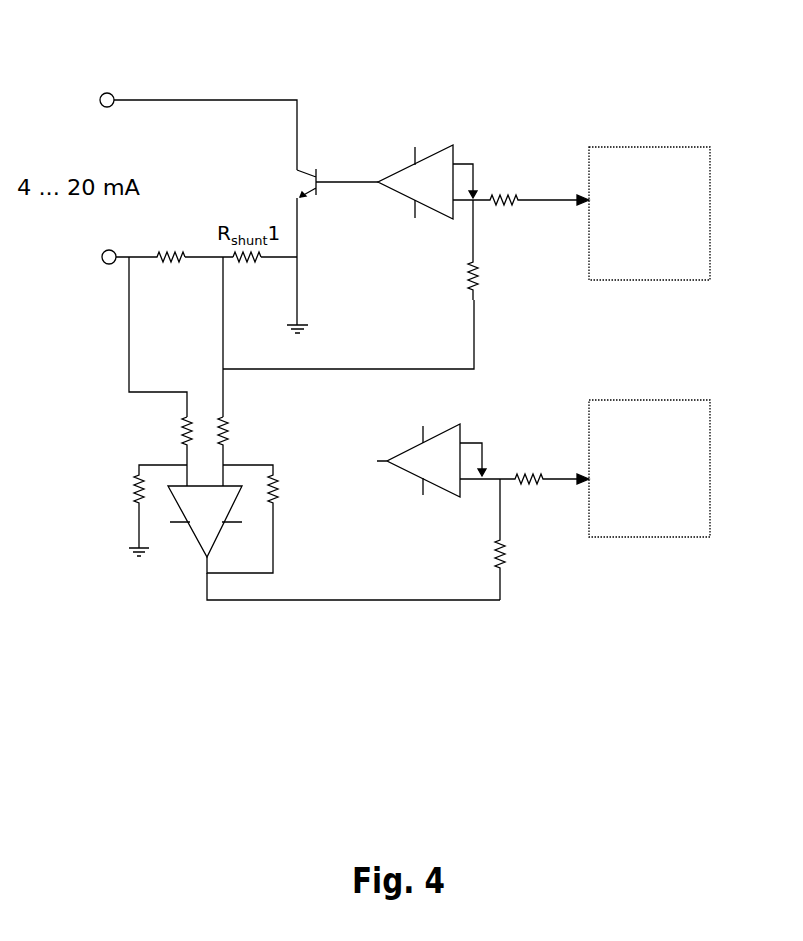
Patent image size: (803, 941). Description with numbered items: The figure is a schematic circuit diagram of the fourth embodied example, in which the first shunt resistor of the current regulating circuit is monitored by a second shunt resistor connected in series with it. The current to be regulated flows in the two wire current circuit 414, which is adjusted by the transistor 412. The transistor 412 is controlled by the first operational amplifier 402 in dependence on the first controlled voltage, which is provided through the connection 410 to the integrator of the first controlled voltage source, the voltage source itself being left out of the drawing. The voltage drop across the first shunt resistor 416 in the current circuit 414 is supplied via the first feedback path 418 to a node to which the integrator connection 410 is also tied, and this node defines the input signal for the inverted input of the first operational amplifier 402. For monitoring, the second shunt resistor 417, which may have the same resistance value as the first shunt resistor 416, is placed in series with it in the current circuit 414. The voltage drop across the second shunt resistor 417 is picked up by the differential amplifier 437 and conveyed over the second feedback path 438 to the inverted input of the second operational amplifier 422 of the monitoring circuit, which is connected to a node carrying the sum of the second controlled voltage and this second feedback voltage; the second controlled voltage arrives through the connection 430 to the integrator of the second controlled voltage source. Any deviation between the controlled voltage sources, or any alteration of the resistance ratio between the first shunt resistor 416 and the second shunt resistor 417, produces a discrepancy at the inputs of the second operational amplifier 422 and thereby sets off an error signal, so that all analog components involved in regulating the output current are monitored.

The first operational amplifier 402 is at (440, 160).
The connection to the integrator of the first controlled voltage source 410 is at (649, 213).
The transistor 412 is at (328, 174).
The current circuit 414 is at (133, 105).
The first shunt resistor 416 is at (252, 213).
The second shunt resistor 417 is at (172, 265).
The first feedback path 418 is at (413, 369).
The second operational amplifier 422 is at (427, 462).
The connection to the integrator of the second controlled voltage source 430 is at (649, 468).
The differential amplifier 437 is at (195, 512).
The second feedback path 438 is at (269, 603).